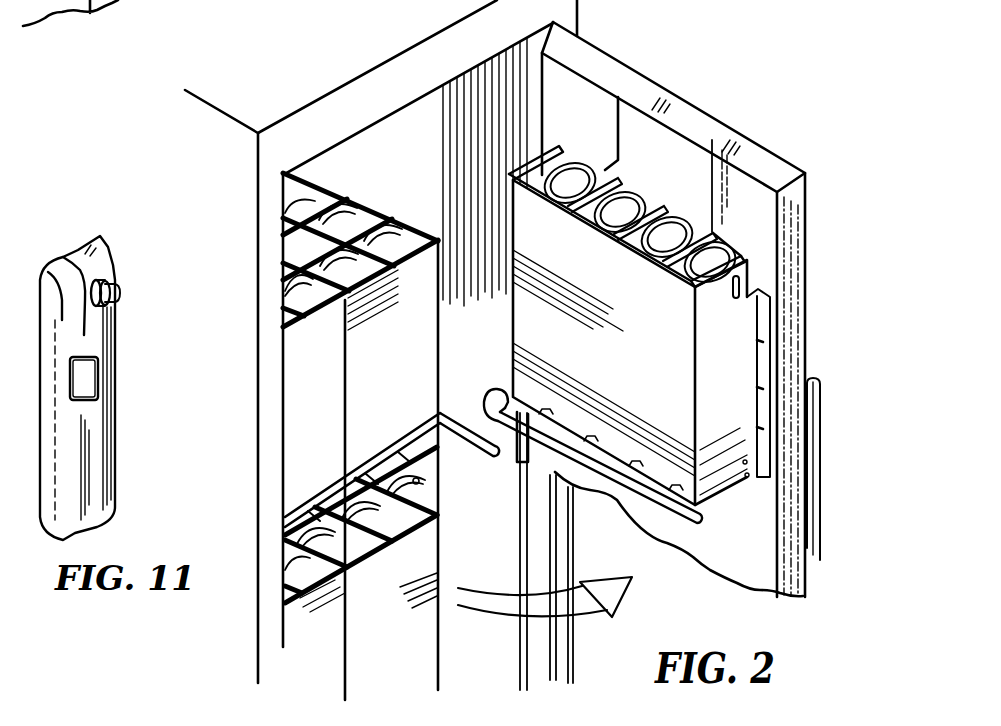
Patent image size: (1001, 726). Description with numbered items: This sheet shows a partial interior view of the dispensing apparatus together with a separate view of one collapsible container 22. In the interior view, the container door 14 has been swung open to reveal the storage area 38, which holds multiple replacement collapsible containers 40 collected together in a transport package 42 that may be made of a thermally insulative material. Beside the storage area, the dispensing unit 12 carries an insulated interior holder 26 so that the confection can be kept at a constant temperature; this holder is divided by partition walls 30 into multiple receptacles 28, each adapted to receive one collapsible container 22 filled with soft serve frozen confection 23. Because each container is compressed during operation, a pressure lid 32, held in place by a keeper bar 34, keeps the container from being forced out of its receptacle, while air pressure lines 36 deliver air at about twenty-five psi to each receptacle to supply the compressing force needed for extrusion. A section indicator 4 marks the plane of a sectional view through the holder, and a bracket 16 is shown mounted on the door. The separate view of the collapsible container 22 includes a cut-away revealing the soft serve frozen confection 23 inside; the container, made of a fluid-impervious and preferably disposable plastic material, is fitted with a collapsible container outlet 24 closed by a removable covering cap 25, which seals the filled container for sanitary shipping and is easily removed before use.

In FIG. 2, the section line 4- 4 is at (626, 30).
In FIG. 2, the dispensing unit 12 is at (737, 362).
In FIG. 2, the container door 14 is at (738, 548).
In FIG. 2, the mounting bracket 16 is at (822, 452).
In FIG. 11, the collapsible container 22 is at (93, 448).
In FIG. 11, the soft serve frozen confection 23 is at (90, 375).
In FIG. 11, the collapsible container outlet 24 is at (100, 281).
In FIG. 11, the removable covering cap 25 is at (121, 292).
In FIG. 2, the insulated interior holder 26 is at (660, 376).
In FIG. 2, the receptacle 28 is at (722, 237).
In FIG. 2, the partition wall 30 is at (695, 240).
In FIG. 2, the pressure lid 32 is at (724, 250).
In FIG. 2, the keeper bar 34 is at (730, 293).
In FIG. 2, the air pressure line 36 is at (671, 532).
In FIG. 2, the storage area 38 is at (378, 155).
In FIG. 2, the replacement collapsible containers 40 is at (349, 198).
In FIG. 2, the transport package 42 is at (298, 352).